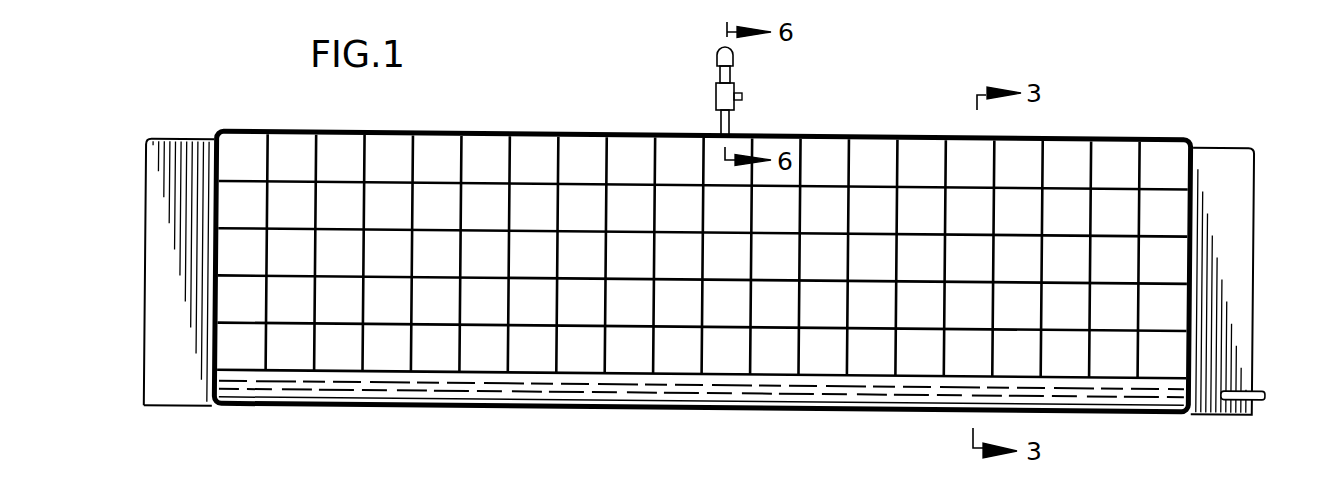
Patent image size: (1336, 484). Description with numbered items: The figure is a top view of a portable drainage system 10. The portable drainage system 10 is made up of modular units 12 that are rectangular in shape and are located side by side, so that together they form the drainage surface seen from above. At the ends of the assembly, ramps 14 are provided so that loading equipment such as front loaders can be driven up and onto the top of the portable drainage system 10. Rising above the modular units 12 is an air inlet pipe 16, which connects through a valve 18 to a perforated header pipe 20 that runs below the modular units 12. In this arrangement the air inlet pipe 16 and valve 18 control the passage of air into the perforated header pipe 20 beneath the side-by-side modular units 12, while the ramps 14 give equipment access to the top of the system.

The portable drainage system 10 is at (1125, 63).
The modular units 12 is at (540, 210).
The ramps 14 is at (178, 156).
The air inlet pipe 16 is at (716, 57).
The valve 18 is at (736, 103).
The perforated header pipe 20 is at (1262, 399).